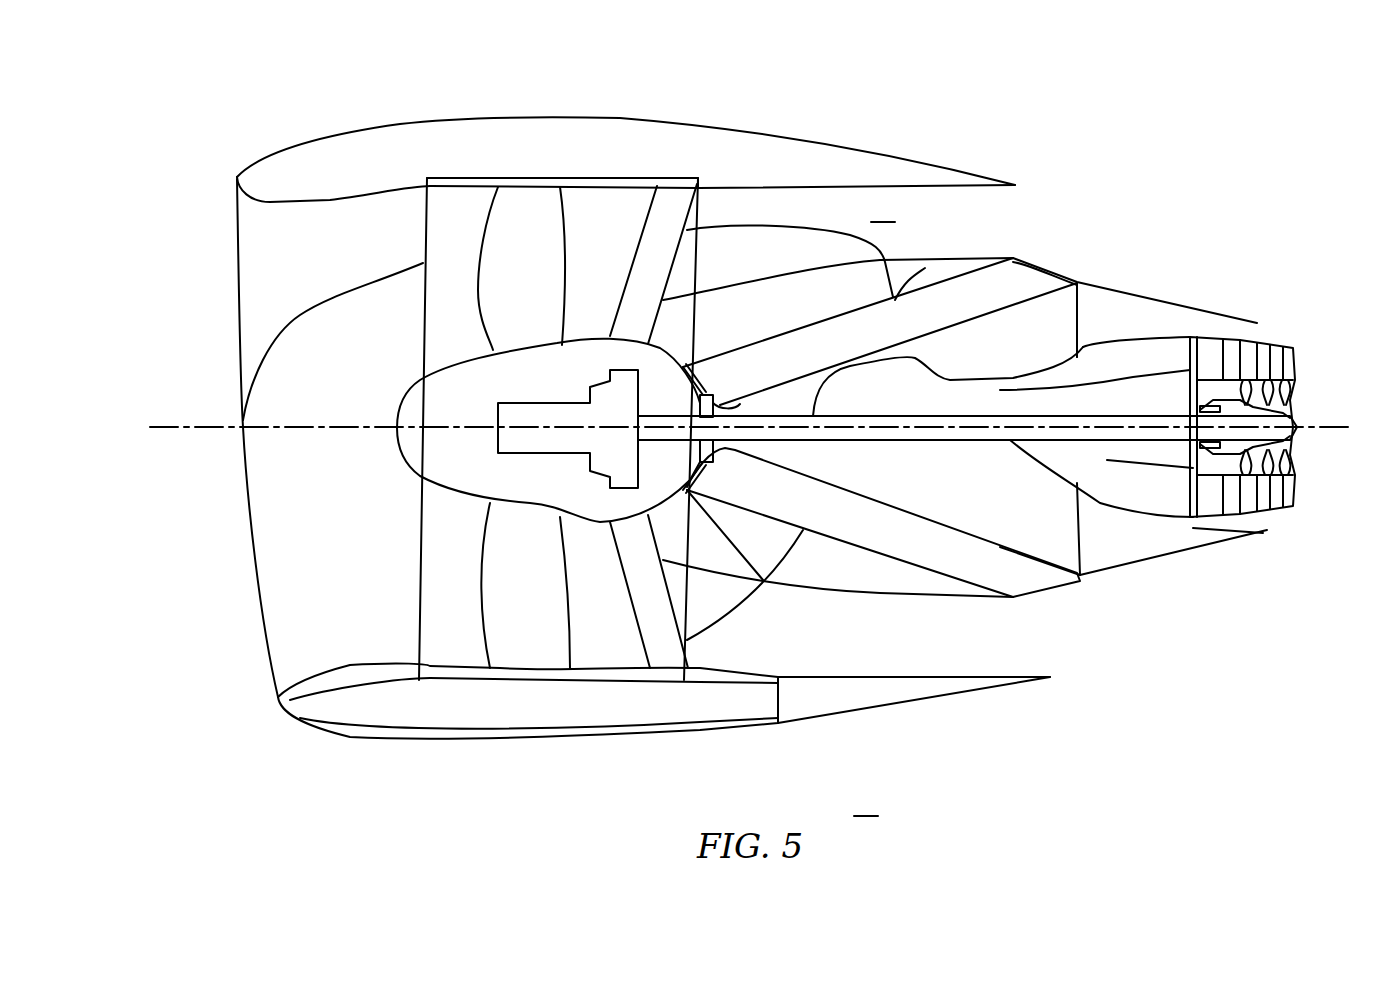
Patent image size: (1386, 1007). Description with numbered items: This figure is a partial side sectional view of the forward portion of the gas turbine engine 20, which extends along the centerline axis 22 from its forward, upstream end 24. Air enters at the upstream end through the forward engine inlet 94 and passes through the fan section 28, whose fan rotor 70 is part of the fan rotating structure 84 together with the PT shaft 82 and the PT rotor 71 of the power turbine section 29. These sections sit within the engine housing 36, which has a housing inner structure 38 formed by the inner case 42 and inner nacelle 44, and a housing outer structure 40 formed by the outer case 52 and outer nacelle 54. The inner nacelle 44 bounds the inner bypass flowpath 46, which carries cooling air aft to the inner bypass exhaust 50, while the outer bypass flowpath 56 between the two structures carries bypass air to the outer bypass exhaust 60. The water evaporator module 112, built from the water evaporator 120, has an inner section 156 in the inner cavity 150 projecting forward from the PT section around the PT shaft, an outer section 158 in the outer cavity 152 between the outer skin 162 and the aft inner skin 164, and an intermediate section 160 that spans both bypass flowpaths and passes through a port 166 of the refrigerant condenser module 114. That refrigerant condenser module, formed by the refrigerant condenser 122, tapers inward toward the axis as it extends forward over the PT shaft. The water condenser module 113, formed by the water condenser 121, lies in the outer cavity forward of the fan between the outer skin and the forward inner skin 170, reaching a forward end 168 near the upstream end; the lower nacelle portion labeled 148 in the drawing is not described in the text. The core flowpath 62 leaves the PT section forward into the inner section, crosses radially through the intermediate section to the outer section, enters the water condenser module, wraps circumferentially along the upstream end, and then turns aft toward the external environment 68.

The gas turbine engine 20 is at (270, 101).
The centerline axis 22 is at (157, 432).
The forward, upstream end 24 is at (237, 178).
The fan section 28 is at (522, 176).
The power turbine (PT) section 29 is at (1280, 385).
The engine housing 36 is at (1003, 162).
The housing inner structure 38 is at (1194, 296).
The housing outer structure 40 is at (626, 131).
The inner case 42 is at (1280, 385).
The inner nacelle 44 is at (1090, 278).
The inner bypass flowpath 46 is at (923, 278).
The inner bypass exhaust 50 is at (1280, 385).
The outer case 52 is at (474, 264).
The outer nacelle 54 is at (626, 131).
The outer bypass flowpath 56 is at (884, 207).
The outer bypass exhaust 60 is at (899, 152).
The core flowpath 62 is at (1296, 365).
The environment 68 is at (867, 800).
The fan rotor 70 is at (479, 369).
The PT rotor 71 is at (1296, 395).
The power turbine (PT) shaft 82 is at (1105, 456).
The fan rotating structure 84 is at (1143, 448).
The forward engine inlet 94 is at (216, 438).
The water evaporator module 112 is at (626, 131).
The water condenser module 113 is at (333, 315).
The refrigerant condenser module 114 is at (871, 549).
The water evaporator 120 is at (440, 120).
The water condenser 121 is at (316, 300).
The refrigerant condenser 122 is at (889, 562).
The lower nacelle 148 is at (664, 736).
The inner cavity 150 is at (1105, 338).
The outer cavity 152 is at (508, 738).
The inner section 156 is at (1148, 340).
The outer section 158 is at (573, 371).
The intermediate section 160 is at (892, 276).
The outer skin 162 is at (626, 131).
The aft inner skin 164 is at (838, 240).
The port 166 is at (882, 368).
The forward end 168 is at (237, 303).
The forward inner skin 170 is at (345, 201).